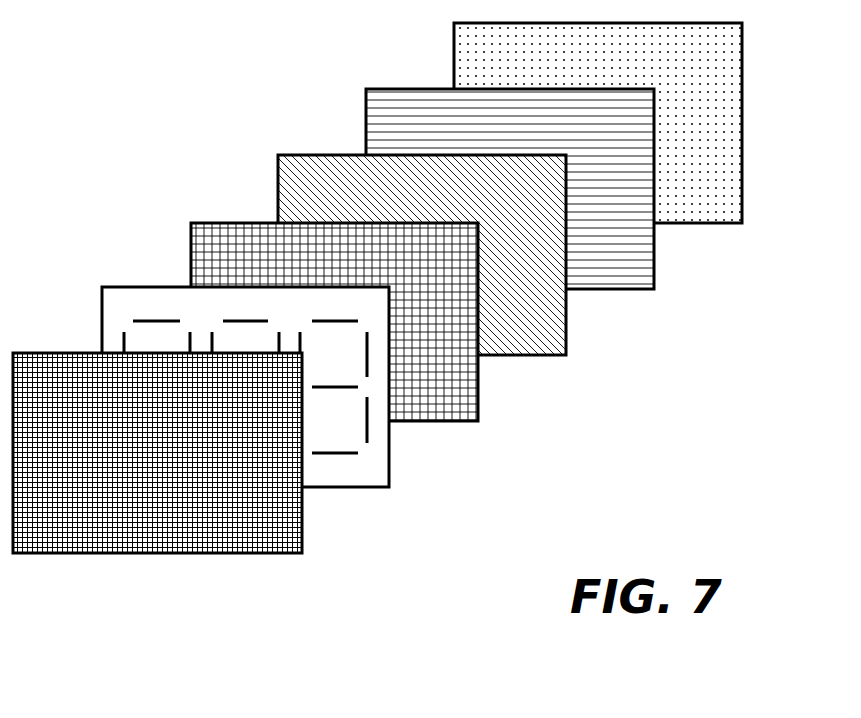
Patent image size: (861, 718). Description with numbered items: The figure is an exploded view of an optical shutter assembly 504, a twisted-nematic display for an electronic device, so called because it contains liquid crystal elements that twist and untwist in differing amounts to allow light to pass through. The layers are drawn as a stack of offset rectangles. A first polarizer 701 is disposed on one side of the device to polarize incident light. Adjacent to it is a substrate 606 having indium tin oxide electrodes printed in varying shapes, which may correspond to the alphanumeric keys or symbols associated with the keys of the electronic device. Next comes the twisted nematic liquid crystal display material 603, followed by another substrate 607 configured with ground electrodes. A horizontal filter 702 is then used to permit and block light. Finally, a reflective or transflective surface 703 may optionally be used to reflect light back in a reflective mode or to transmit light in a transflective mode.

The optical shutter assembly 504 is at (426, 314).
The reflective or transflective surface 703 is at (708, 223).
The horizontal filter 702 is at (621, 289).
The substrate 607 is at (532, 355).
The twisted nematic liquid crystal display material 603 is at (443, 421).
The substrate 606 is at (348, 487).
The first polarizer 701 is at (266, 553).